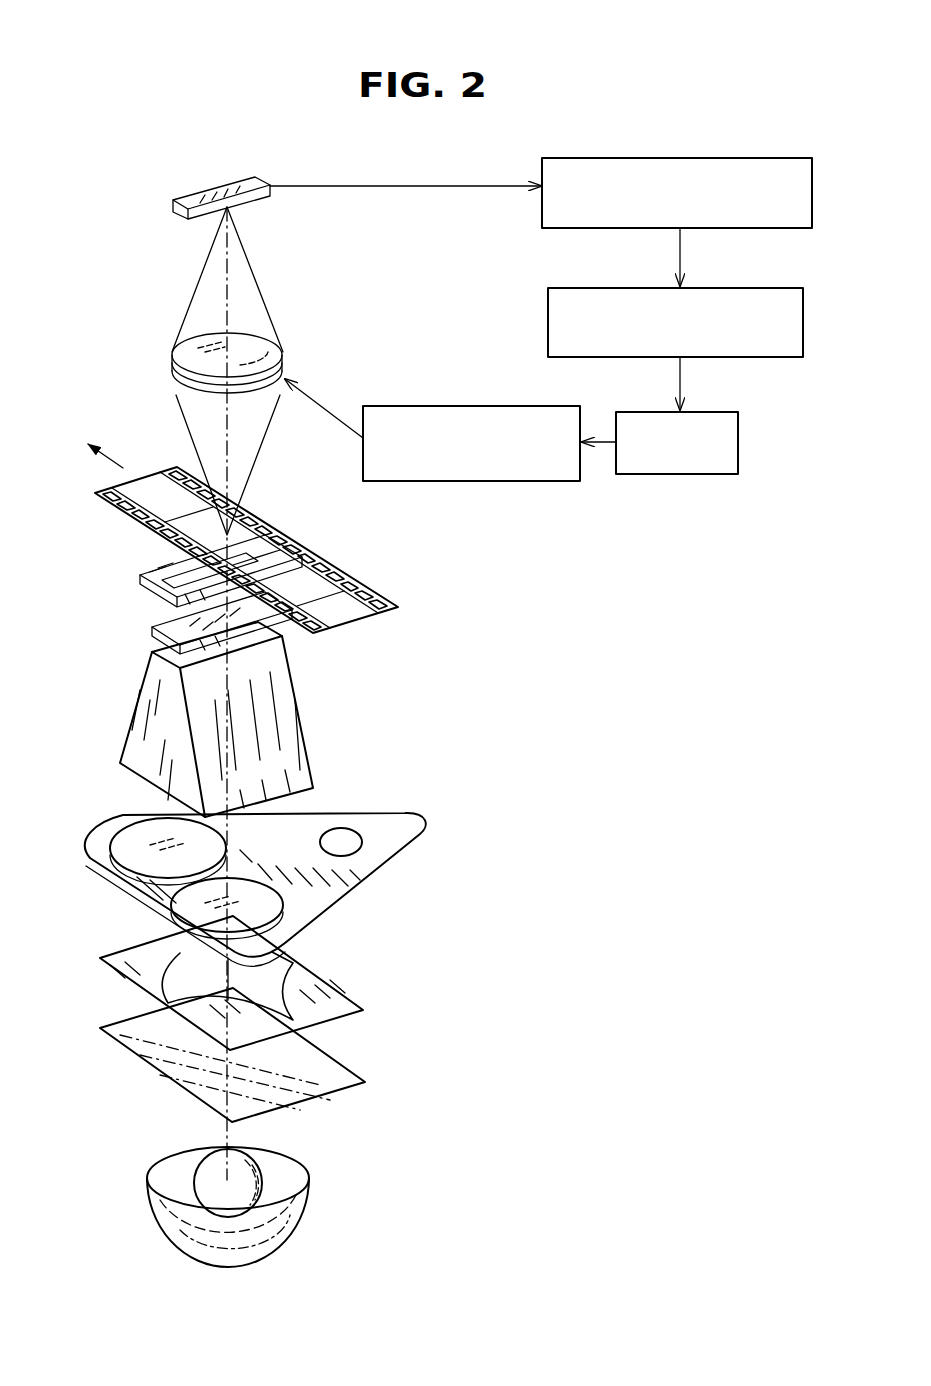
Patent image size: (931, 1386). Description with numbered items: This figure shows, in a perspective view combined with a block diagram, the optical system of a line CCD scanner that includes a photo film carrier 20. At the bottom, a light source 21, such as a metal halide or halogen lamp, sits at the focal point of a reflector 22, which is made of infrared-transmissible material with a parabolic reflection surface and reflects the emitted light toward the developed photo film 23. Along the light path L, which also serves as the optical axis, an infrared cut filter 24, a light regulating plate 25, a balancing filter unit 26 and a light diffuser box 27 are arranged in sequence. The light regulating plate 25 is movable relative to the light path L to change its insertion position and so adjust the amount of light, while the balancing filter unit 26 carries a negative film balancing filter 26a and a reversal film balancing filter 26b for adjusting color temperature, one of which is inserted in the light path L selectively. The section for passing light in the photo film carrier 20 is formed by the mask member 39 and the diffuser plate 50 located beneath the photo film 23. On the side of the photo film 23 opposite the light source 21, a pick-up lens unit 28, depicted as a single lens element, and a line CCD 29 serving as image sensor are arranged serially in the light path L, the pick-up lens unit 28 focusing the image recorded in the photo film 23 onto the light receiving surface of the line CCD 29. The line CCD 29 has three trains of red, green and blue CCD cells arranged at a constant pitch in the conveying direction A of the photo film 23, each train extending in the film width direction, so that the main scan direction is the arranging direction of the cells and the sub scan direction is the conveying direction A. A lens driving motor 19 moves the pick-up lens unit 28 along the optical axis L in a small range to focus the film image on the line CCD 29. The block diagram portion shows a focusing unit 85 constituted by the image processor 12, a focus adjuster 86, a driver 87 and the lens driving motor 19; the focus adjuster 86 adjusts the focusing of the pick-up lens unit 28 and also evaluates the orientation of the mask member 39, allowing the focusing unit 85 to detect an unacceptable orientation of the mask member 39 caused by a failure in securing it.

The image processor 12 is at (740, 158).
The focus adjuster 86 is at (766, 288).
The driver 87 is at (730, 412).
The lens driving motor 19 is at (473, 406).
The focusing unit 85 is at (470, 503).
The line CCD 29 is at (192, 188).
The pick-up lens unit 28 is at (175, 364).
The photo film 23 is at (370, 620).
The mask member 39 is at (140, 590).
The diffuser plate 50 is at (152, 632).
The light diffuser box 27 is at (307, 698).
The photo film carrier 20 is at (414, 761).
The balancing filter unit 26 is at (423, 843).
The negative film balancing filter 26a is at (180, 910).
The reversal film balancing filter 26b is at (125, 837).
The light regulating plate 25 is at (357, 1010).
The infrared cut filter 24 is at (363, 1083).
The light source 21 is at (258, 1177).
The reflector 22 is at (310, 1210).
The light path L is at (228, 825).
The conveying direction A is at (118, 456).